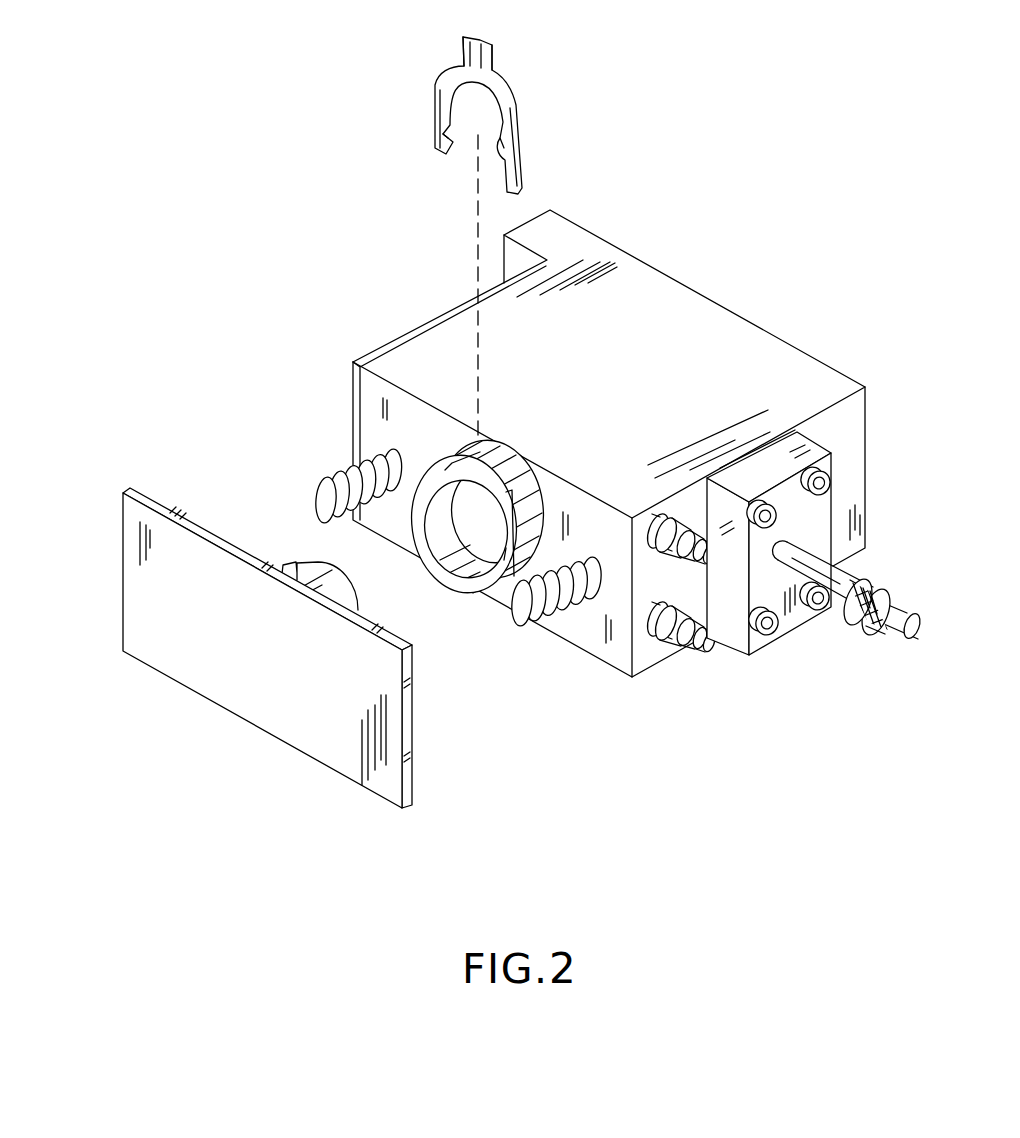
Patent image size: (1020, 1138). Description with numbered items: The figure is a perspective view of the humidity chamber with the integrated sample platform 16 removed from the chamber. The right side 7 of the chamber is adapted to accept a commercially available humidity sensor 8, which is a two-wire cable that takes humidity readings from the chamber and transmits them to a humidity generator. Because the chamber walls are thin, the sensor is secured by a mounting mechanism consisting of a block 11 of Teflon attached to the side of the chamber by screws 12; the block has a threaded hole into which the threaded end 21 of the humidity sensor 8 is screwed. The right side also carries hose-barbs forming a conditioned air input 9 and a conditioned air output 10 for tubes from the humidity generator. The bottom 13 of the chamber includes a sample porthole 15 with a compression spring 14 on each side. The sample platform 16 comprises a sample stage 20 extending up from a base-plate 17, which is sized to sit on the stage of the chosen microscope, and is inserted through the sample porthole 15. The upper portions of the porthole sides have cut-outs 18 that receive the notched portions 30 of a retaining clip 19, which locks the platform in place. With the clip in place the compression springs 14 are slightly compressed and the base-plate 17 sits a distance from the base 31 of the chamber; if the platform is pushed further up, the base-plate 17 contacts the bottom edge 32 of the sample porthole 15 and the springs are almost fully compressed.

The right side 7 is at (565, 443).
The humidity sensor 8 is at (828, 573).
The conditioned air input 9 is at (675, 548).
The conditioned air output 10 is at (680, 652).
The block 11 is at (730, 622).
The screws 12 is at (775, 517).
The bottom 13 is at (352, 460).
The compression springs 14 is at (317, 490).
The sample porthole 15 is at (466, 502).
The sample platform 16 is at (123, 548).
The base-plate 17 is at (164, 620).
The cut-outs 18 is at (512, 513).
The retaining clip 19 is at (437, 85).
The sample stage 20 is at (327, 572).
The threaded end 21 is at (877, 588).
The notched portions 30 is at (500, 140).
The base 31 is at (598, 540).
The bottom edge 32 is at (446, 476).